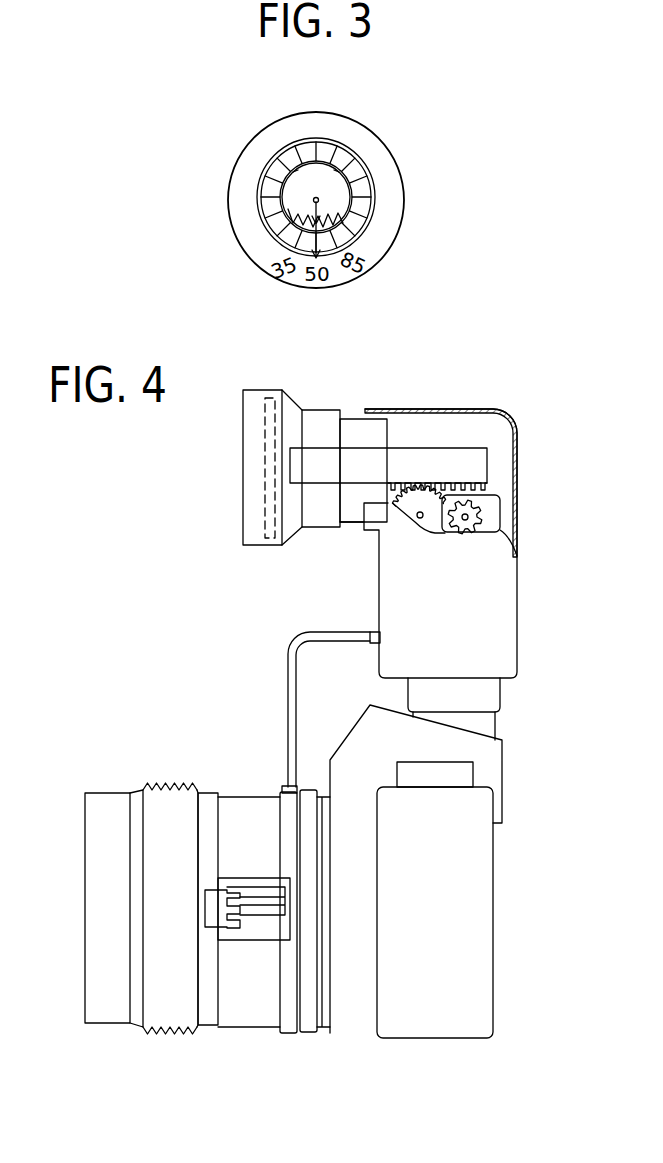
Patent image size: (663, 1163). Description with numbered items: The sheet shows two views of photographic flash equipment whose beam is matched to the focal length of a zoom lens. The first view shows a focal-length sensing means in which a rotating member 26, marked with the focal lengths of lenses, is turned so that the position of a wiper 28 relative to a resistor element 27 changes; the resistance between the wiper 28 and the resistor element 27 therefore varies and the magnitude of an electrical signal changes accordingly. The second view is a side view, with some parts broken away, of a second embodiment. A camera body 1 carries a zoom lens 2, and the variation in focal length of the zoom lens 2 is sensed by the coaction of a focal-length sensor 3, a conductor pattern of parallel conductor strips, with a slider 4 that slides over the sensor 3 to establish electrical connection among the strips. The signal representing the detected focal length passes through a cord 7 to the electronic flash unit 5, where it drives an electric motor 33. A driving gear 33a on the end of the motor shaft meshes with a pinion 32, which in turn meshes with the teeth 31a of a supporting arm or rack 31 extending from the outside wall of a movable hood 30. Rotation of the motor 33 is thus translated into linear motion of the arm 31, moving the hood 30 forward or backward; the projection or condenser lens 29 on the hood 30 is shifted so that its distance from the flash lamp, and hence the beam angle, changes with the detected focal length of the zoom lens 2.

In FIG. 4, the camera body 1 is at (485, 925).
In FIG. 4, the zoom lens 2 is at (103, 793).
In FIG. 4, the focal-length sensor 3 is at (252, 940).
In FIG. 4, the slider 4 is at (205, 907).
In FIG. 4, the electronic flash unit 5 is at (518, 600).
In FIG. 4, the cord 7 is at (287, 727).
In FIG. 3, the rotating member 26 is at (327, 145).
In FIG. 3, the resistor element 27 is at (338, 222).
In FIG. 3, the wiper 28 is at (316, 210).
In FIG. 4, the projection or condenser lens 29 is at (270, 533).
In FIG. 4, the movable hood 30 is at (297, 538).
In FIG. 4, the supporting arm or rack 31 is at (420, 460).
In FIG. 4, the teeth 31a is at (455, 480).
In FIG. 4, the pinion 32 is at (418, 528).
In FIG. 4, the electric motor 33 is at (490, 508).
In FIG. 4, the driving gear 33a is at (467, 532).